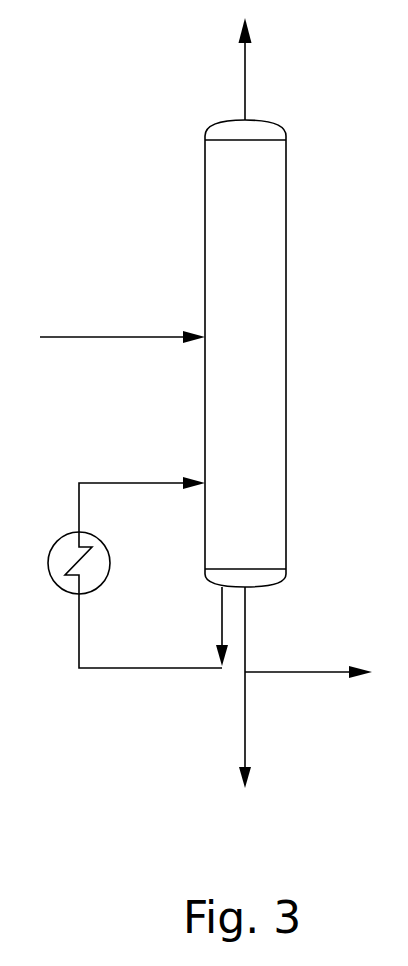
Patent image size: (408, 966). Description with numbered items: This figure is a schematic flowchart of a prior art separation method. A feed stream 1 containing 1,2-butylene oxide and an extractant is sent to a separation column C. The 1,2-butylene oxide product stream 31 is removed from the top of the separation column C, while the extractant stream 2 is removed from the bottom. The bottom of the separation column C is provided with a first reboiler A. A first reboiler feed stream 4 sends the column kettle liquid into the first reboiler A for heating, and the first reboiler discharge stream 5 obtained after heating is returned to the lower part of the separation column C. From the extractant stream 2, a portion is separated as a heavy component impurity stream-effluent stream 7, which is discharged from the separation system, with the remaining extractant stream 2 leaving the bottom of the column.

The 1,2-butylene oxide product stream 31 is at (299, 61).
The first stream 1 is at (122, 316).
The first reboiler discharge stream 5 is at (142, 485).
The first reboiler feed stream 4 is at (153, 627).
The heavy component impurity stream-effluent stream 7 is at (308, 651).
The extractant stream 2 is at (257, 690).
The separation column C is at (245, 353).
The first reboiler A is at (94, 563).